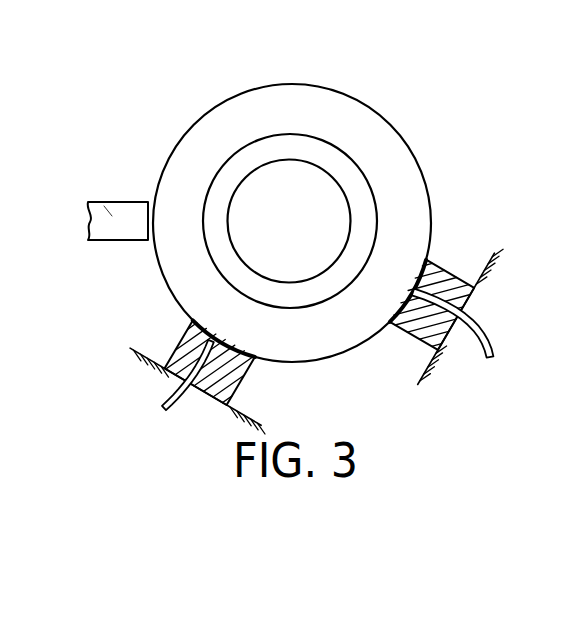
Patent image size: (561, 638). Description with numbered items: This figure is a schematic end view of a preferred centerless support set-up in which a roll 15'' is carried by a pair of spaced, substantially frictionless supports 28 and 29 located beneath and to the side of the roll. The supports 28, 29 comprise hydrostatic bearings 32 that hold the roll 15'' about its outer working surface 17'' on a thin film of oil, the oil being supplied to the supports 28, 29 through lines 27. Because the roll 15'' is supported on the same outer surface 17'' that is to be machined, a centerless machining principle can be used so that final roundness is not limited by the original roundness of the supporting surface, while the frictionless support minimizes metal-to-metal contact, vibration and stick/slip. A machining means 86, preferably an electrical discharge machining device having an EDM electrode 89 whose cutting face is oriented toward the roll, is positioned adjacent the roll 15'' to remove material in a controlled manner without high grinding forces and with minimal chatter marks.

The roll 15'' is at (300, 210).
The outer working surface 17'' is at (335, 219).
The hydrostatic bearings 32 is at (190, 345).
The lines 27 is at (182, 412).
The support 29 is at (238, 386).
The support 28 is at (412, 338).
The machining means 86 is at (88, 202).
The EDM electrode 89 is at (108, 212).